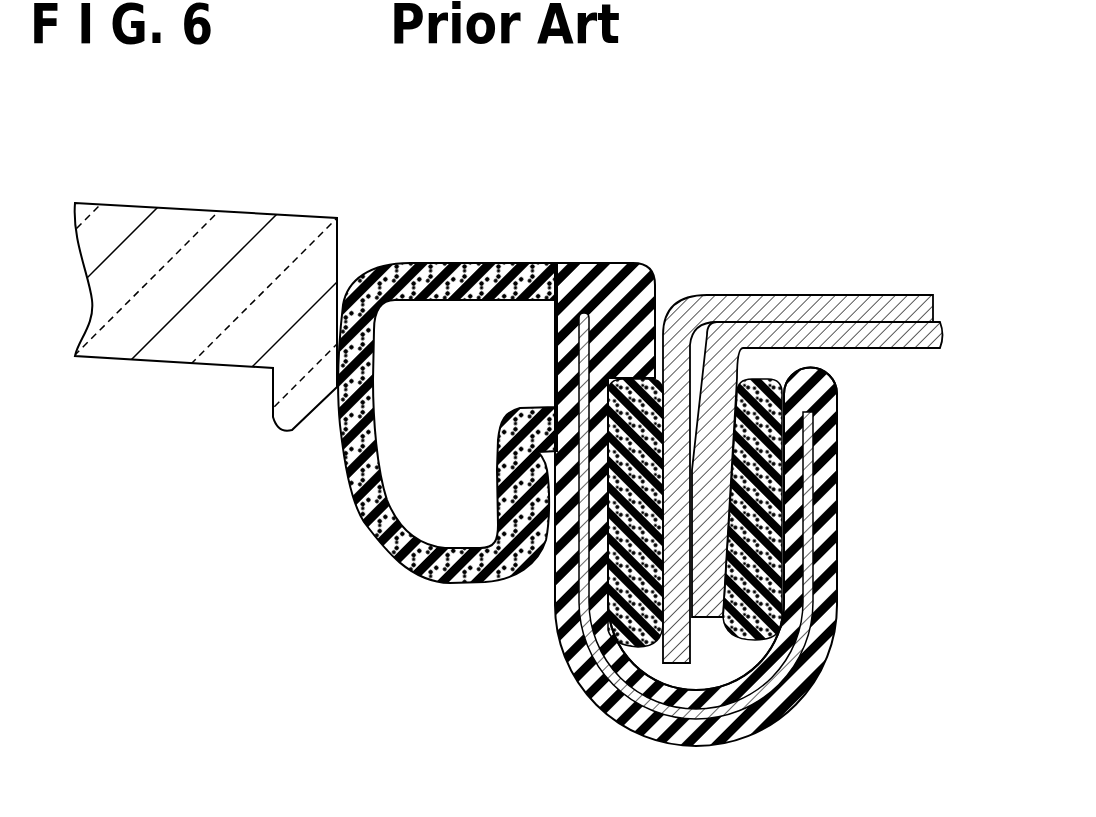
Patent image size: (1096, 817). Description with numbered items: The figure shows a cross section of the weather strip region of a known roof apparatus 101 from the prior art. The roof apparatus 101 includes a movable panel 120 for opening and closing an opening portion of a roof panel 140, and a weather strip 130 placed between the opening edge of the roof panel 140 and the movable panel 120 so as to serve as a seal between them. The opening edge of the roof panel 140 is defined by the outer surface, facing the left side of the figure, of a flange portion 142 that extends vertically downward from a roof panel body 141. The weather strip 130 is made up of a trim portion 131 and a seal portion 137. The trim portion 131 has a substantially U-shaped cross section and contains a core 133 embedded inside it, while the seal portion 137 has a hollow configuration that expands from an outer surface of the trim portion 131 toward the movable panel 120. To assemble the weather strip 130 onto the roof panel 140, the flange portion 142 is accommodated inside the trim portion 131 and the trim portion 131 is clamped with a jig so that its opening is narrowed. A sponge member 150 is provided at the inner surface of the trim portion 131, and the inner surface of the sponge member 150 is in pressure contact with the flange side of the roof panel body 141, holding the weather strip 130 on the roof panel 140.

The roof apparatus 101 is at (599, 456).
The movable panel 120 is at (175, 228).
The weather strip 130 is at (671, 534).
The trim portion 131 is at (837, 530).
The core 133 is at (747, 712).
The seal portion 137 is at (350, 483).
The roof panel 140 is at (801, 408).
The roof panel body 141 is at (817, 425).
The flange portion 142 is at (665, 352).
The sponge member 150 is at (678, 722).